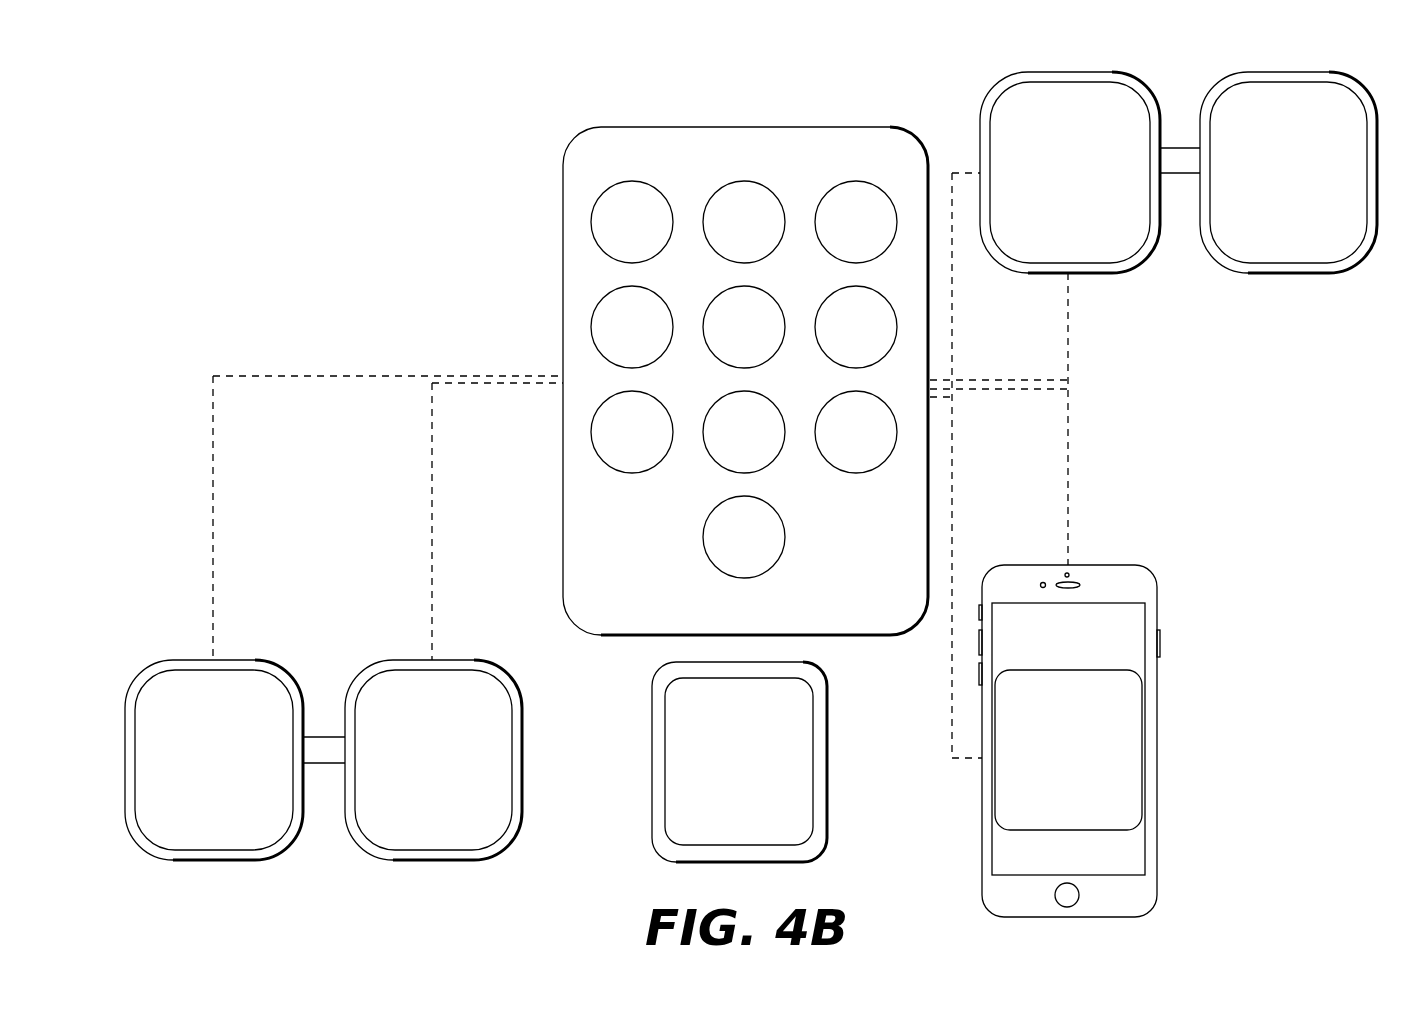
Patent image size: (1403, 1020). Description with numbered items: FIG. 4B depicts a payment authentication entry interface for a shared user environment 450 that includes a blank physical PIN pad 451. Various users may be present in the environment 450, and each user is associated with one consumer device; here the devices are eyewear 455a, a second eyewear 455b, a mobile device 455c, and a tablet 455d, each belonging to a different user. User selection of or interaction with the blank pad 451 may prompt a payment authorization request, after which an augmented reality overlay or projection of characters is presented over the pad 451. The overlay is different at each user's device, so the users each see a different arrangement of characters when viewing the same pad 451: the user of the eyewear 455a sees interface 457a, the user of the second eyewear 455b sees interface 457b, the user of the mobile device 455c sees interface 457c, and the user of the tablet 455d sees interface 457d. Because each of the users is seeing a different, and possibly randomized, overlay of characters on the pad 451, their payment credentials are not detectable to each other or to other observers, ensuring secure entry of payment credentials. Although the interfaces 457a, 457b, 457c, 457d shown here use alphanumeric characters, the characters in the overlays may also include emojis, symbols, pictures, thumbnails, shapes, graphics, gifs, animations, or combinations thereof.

The environment 450 is at (724, 64).
The physical PIN pad 451 is at (831, 137).
The eyewear 455a is at (165, 666).
The interface 457a is at (257, 832).
The eyewear 455b is at (1083, 77).
The interface 457b is at (1110, 244).
The mobile device 455c is at (1100, 564).
The interface 457c is at (1050, 802).
The tablet 455d is at (822, 765).
The interface 457d is at (794, 823).